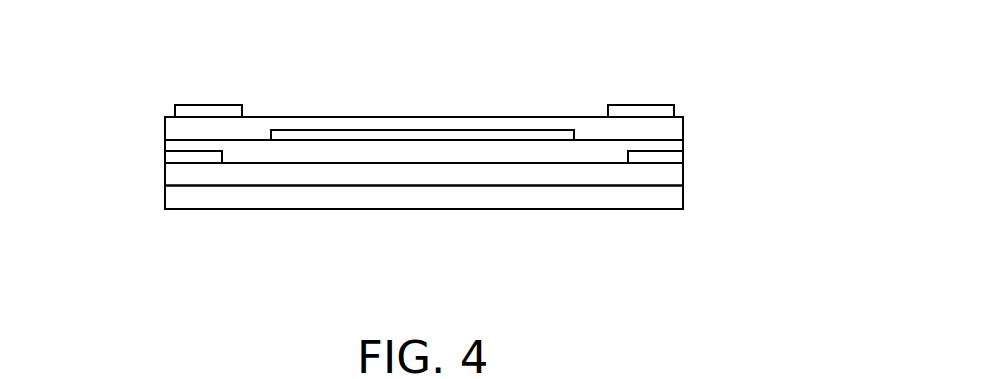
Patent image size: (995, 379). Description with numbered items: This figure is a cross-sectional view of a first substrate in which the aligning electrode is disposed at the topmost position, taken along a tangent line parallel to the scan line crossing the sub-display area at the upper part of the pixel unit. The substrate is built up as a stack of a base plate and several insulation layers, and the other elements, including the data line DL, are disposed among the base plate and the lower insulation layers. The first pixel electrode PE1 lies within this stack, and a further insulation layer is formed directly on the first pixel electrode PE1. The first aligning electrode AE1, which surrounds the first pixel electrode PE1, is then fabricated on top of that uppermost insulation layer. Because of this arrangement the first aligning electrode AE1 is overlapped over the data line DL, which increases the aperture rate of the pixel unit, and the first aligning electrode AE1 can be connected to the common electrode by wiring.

The first aligning electrode AE1 is at (220, 108).
The first pixel electrode PE1 is at (427, 133).
The data line DL is at (180, 155).